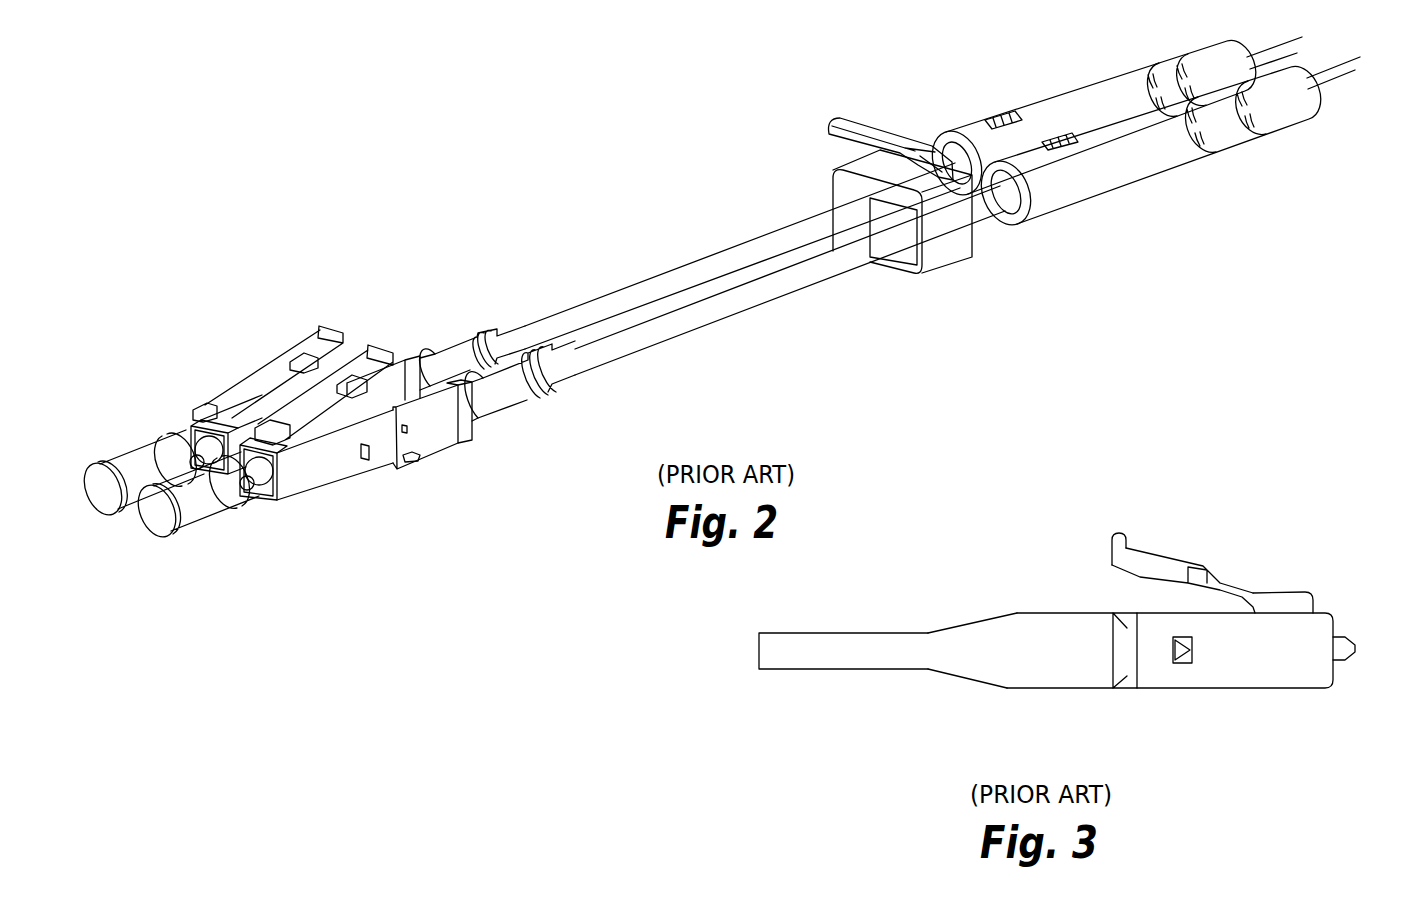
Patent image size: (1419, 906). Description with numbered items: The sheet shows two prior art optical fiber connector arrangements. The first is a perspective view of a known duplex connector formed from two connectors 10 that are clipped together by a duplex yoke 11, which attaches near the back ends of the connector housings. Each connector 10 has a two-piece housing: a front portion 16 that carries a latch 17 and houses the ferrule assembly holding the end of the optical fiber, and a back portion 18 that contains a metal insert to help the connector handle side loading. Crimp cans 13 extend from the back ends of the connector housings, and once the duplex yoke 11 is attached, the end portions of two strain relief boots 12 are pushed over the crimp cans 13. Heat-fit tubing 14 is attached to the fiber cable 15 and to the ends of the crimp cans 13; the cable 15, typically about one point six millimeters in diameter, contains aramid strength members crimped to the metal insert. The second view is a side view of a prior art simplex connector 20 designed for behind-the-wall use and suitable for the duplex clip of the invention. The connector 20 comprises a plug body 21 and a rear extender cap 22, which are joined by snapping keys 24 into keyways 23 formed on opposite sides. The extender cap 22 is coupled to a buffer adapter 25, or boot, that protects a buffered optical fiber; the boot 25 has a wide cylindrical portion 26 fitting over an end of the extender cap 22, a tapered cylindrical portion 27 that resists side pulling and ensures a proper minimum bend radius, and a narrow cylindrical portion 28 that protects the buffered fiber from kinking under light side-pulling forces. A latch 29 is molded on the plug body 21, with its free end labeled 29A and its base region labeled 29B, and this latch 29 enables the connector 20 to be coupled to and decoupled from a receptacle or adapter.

In FIG. 2, the connectors 10 is at (190, 427).
In FIG. 2, the duplex yoke 11 is at (957, 233).
In FIG. 2, the strain relief boots 12 is at (1047, 112).
In FIG. 2, the crimp cans 13 is at (424, 366).
In FIG. 2, the heat-fit tubing 14 is at (450, 353).
In FIG. 2, the fiber cable 15 is at (647, 284).
In FIG. 2, the front portion 16 is at (313, 478).
In FIG. 2, the latch 17 is at (378, 340).
In FIG. 2, the back portion 18 is at (433, 437).
In FIG. 3, the connector 20 is at (1084, 614).
In FIG. 3, the plug body 21 is at (1305, 672).
In FIG. 3, the rear extender cap 22 is at (1122, 683).
In FIG. 3, the keyways 23 is at (1177, 667).
In FIG. 3, the keys 24 is at (1193, 647).
In FIG. 3, the buffer adapter 25 is at (1007, 672).
In FIG. 3, the wide cylindrical portion 26 is at (1055, 623).
In FIG. 3, the tapered cylindrical portion 27 is at (964, 630).
In FIG. 3, the narrow cylindrical portion 28 is at (842, 655).
In FIG. 3, the latch 29 is at (1198, 536).
In FIG. 3, the latch free end 29A is at (1118, 533).
In FIG. 3, the latch base 29B is at (1270, 602).